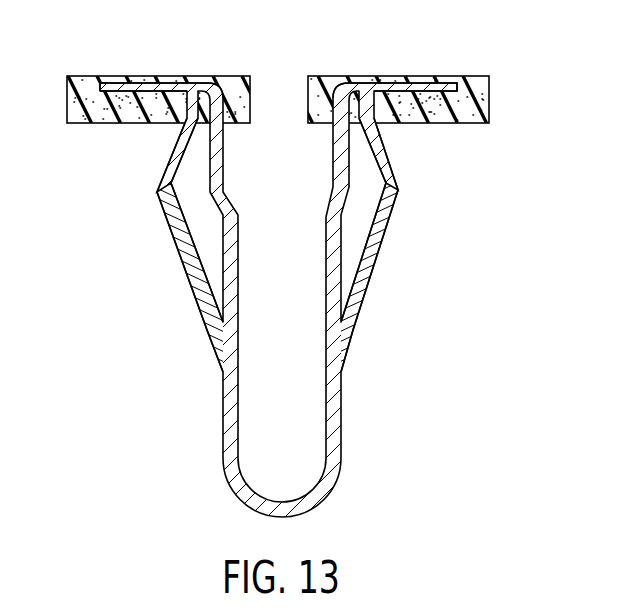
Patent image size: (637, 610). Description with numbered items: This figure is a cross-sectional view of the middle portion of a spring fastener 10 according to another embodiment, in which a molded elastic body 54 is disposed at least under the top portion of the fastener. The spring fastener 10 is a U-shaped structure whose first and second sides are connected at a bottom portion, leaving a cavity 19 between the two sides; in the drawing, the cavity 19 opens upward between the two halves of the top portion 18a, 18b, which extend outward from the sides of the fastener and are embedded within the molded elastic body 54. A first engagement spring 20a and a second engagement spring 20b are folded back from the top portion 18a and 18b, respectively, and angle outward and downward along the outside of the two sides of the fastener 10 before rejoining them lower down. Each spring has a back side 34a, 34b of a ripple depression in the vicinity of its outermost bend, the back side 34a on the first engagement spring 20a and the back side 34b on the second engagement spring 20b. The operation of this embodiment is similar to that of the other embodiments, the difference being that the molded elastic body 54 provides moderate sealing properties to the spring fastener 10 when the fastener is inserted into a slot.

The spring fastener 10 is at (147, 381).
The top portion 18a is at (118, 82).
The top portion 18b is at (405, 86).
The cavity 19 is at (283, 157).
The first engagement spring 20a is at (188, 278).
The second engagement spring 20b is at (382, 255).
The back side 34a is at (160, 186).
The back side 34b is at (398, 183).
The molded elastic body 54 is at (110, 123).